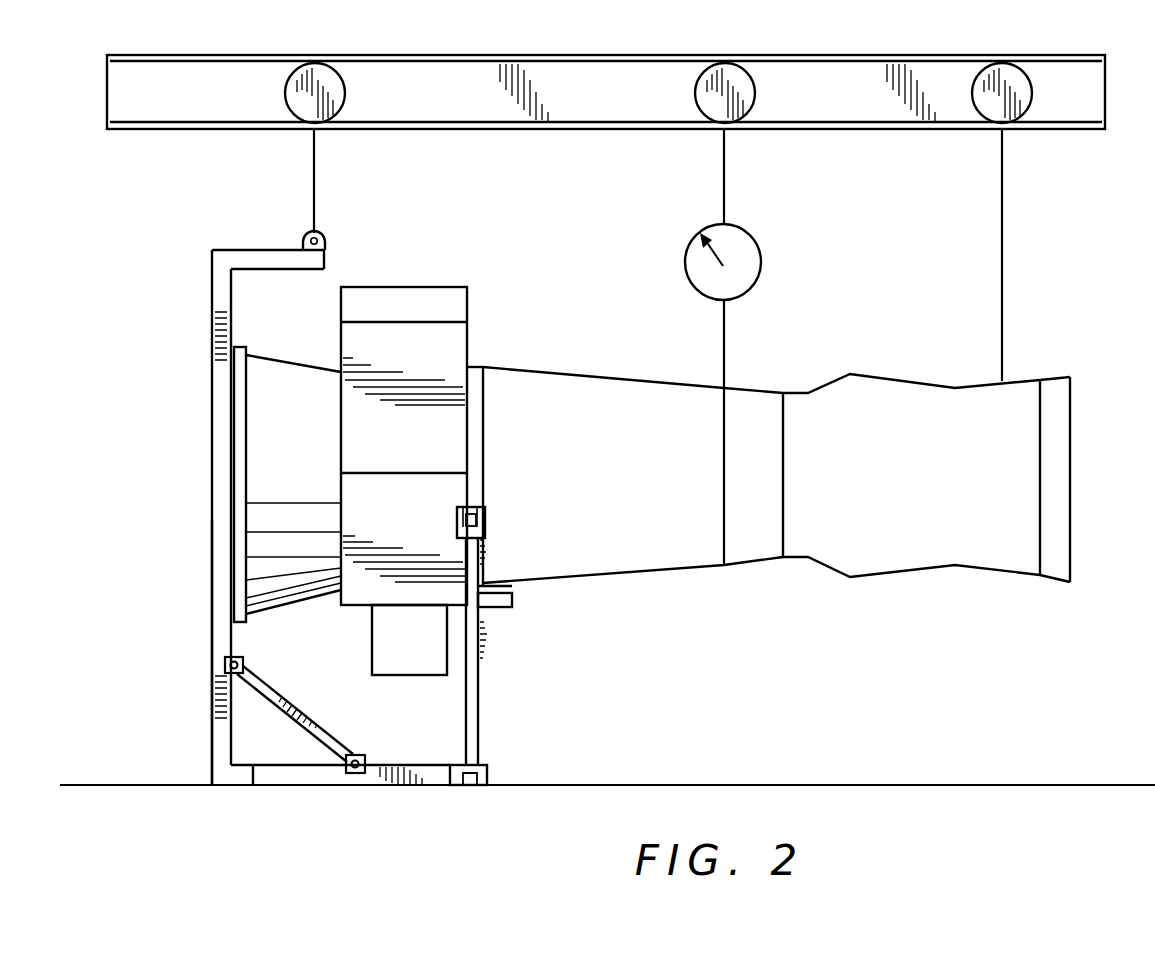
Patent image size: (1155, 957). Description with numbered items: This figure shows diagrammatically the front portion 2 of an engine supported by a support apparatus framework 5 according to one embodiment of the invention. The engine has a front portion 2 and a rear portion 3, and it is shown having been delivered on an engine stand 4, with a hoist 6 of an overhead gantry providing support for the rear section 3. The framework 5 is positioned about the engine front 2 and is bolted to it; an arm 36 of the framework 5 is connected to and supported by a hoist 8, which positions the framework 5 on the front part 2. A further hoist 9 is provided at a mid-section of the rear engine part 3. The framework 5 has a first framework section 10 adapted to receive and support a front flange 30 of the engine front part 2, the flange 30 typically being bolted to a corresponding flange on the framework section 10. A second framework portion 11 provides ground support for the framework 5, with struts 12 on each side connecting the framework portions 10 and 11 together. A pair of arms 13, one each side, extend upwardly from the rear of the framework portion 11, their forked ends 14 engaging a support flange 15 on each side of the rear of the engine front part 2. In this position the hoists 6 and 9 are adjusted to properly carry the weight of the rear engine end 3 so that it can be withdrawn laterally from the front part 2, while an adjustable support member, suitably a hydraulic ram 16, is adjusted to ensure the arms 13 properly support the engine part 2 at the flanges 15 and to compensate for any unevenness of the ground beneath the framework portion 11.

The front portion 2 is at (291, 368).
The rear portion 3 is at (903, 490).
The engine stand 4 is at (714, 575).
The support apparatus framework 5 is at (202, 473).
The hoist 6 is at (1004, 197).
The hoist 8 is at (316, 173).
The hoist 9 is at (726, 180).
The first framework section 10 is at (204, 527).
The second framework portion 11 is at (354, 780).
The struts 12 is at (286, 703).
The arms 13 is at (472, 714).
The forked ends 14 is at (480, 524).
The support flange 15 is at (472, 502).
The hydraulic ram 16 is at (470, 790).
The front flange 30 is at (236, 382).
The arm 36 is at (266, 256).